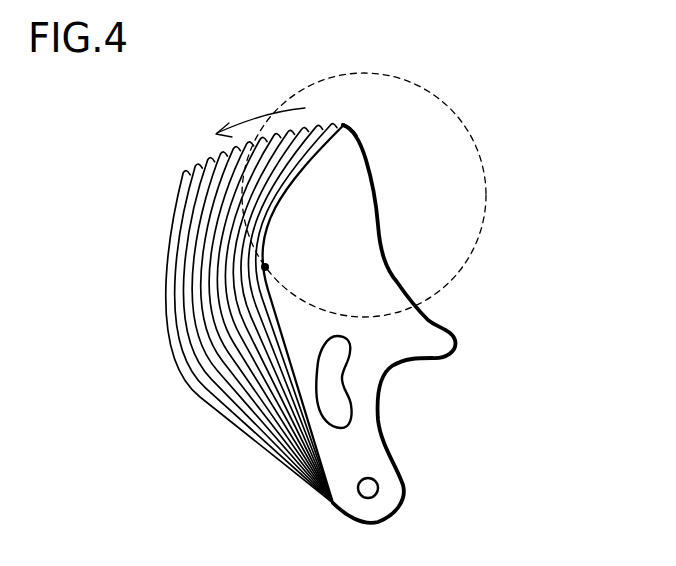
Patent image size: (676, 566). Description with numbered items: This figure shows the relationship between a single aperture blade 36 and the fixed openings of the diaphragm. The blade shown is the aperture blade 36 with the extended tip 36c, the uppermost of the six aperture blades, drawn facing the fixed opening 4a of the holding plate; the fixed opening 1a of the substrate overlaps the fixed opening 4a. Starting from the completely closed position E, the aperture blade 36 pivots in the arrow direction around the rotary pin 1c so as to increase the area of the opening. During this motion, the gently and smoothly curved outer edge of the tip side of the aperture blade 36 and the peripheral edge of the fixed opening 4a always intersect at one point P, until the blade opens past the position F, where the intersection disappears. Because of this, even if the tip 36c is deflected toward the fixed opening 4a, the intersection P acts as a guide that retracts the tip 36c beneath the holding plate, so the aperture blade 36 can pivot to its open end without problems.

The aperture blade 36 is at (404, 503).
The extended tip 36c is at (360, 134).
The rotary pin 1c is at (360, 495).
The fixed opening of the holding plate 4a is at (424, 195).
The fixed opening of the substrate 1a is at (482, 160).
The completely closed position E is at (308, 157).
The position F is at (231, 187).
The intersection point P is at (276, 260).